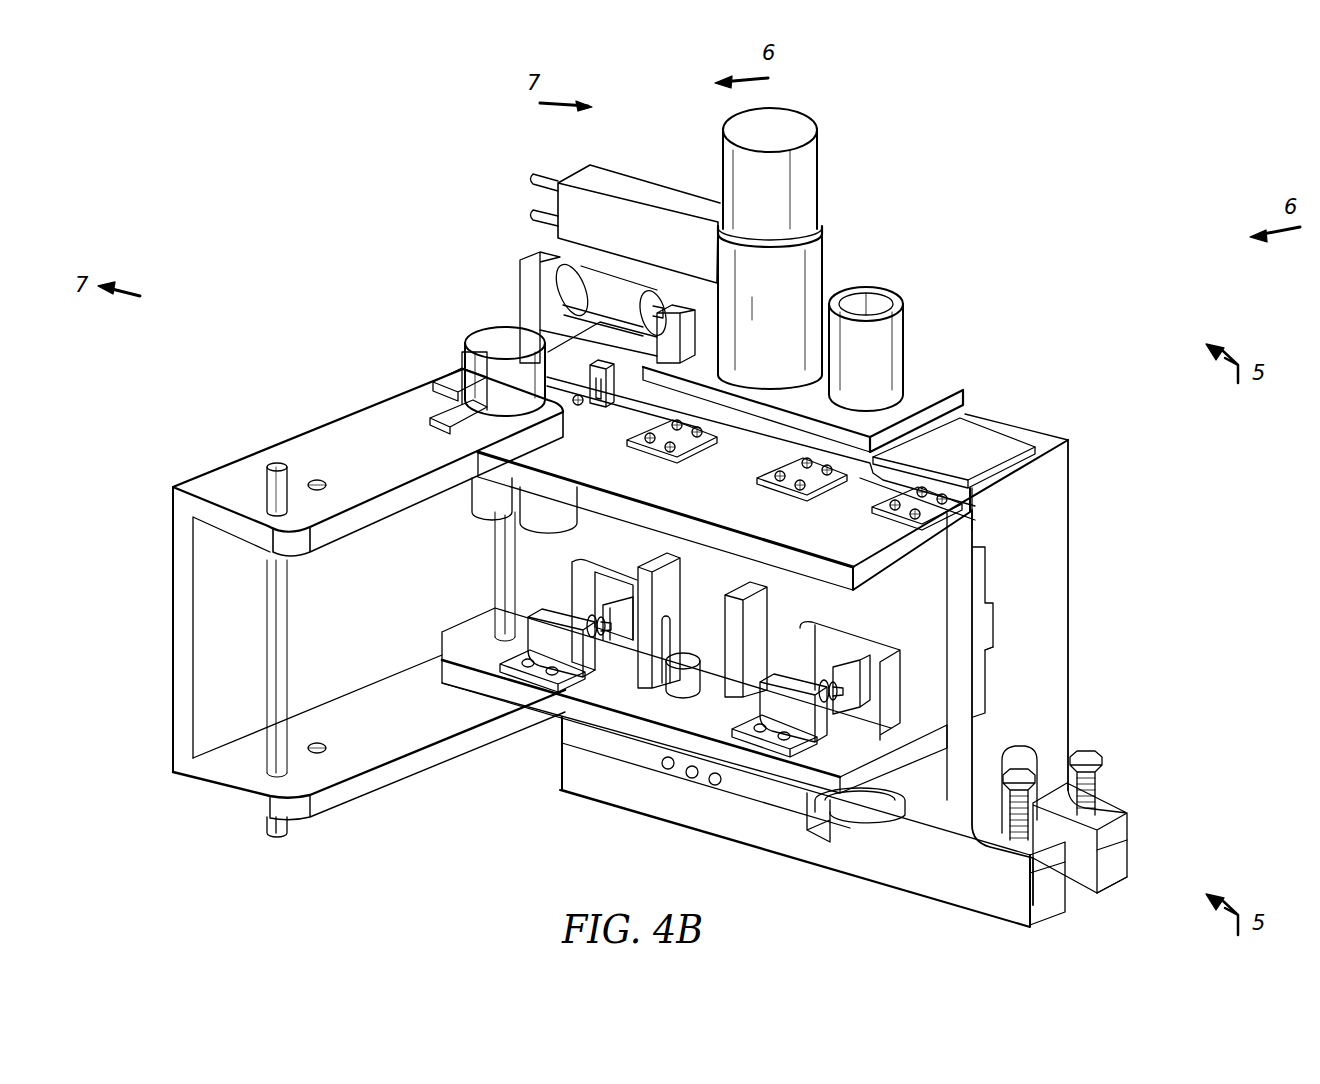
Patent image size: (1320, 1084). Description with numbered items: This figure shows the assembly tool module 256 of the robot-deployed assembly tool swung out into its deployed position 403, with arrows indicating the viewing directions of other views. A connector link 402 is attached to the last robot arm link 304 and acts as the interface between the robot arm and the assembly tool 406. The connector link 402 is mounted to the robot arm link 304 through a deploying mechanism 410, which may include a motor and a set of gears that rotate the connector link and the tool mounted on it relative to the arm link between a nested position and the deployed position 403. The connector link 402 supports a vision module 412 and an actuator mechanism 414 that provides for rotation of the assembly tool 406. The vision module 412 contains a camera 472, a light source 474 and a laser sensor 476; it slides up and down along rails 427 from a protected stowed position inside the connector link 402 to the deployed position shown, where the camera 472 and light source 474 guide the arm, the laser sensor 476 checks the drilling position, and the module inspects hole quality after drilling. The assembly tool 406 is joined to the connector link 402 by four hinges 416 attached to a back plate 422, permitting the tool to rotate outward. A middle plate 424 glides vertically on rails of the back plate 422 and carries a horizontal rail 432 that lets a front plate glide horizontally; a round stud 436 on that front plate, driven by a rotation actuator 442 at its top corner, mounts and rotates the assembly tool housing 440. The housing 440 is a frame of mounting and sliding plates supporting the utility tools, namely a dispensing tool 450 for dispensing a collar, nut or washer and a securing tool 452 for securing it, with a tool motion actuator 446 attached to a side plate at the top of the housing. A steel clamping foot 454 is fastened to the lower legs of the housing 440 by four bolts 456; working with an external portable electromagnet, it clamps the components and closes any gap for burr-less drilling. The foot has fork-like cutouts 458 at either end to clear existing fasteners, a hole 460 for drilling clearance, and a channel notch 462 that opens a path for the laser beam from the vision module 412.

The assembly tool module 256 is at (1010, 262).
The robot arm link 304 is at (343, 415).
The connector link 402 is at (480, 679).
The deployed position 403 is at (1025, 343).
The assembly tool 406 is at (1017, 424).
The deploying mechanism 410 is at (495, 330).
The vision module 412 is at (690, 792).
The actuator mechanism 414 is at (600, 622).
The hinges 416 is at (695, 455).
The back plate 422 is at (978, 526).
The middle plate 424 is at (988, 582).
The rails 427 is at (655, 556).
The horizontal rail 432 is at (990, 655).
The round stud 436 is at (680, 404).
The assembly tool housing 440 is at (1070, 606).
The rotation actuator 442 is at (600, 412).
The tool motion actuator 446 is at (615, 285).
The dispensing tool 450 is at (900, 335).
The securing tool 452 is at (723, 162).
The clamping foot 454 is at (972, 896).
The bolts 456 is at (1018, 765).
The fork-like cutouts 458 is at (1072, 900).
The hole 460 is at (876, 815).
The channel notch 462 is at (820, 830).
The camera 472 is at (686, 778).
The light source 474 is at (660, 768).
The laser sensor 476 is at (721, 784).